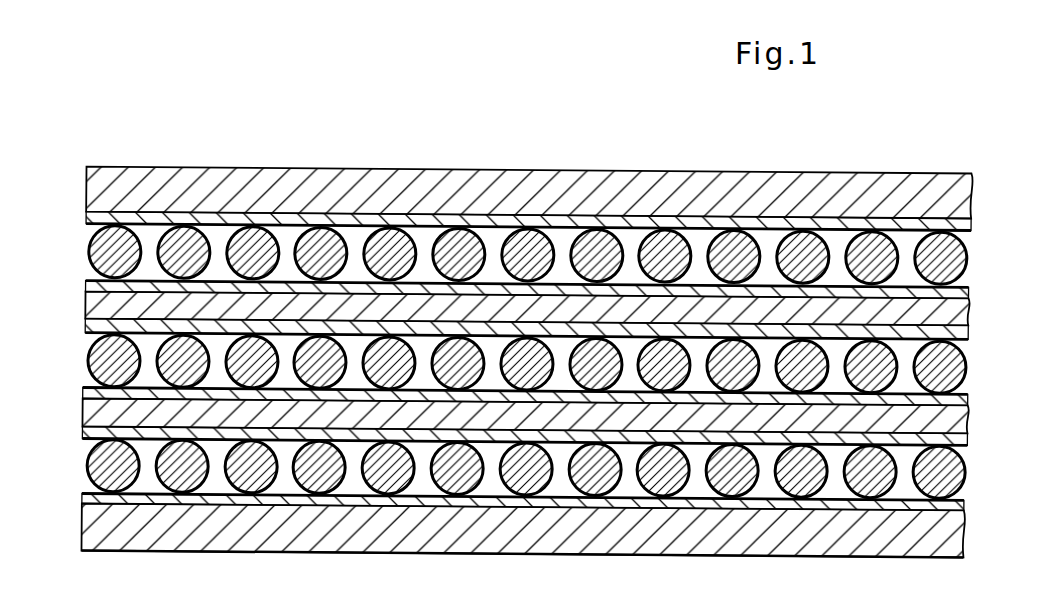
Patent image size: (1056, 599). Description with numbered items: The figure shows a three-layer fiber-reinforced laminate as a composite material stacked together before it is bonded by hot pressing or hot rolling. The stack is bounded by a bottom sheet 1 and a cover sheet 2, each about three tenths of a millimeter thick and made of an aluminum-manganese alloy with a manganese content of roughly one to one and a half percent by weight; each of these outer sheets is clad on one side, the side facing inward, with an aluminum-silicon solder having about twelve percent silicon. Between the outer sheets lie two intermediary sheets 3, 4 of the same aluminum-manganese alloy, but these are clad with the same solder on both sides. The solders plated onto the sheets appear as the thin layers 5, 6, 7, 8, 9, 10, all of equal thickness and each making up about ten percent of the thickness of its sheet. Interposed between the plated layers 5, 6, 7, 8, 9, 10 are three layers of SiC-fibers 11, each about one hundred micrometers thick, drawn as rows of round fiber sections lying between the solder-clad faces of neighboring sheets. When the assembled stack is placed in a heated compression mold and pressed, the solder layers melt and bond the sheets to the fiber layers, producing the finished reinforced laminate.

The bottom sheet 1 is at (112, 533).
The cover sheet 2 is at (107, 194).
The intermediary sheet 3 is at (107, 308).
The intermediary sheet 4 is at (105, 418).
The plated solder layer 5 is at (970, 224).
The plated solder layer 6 is at (968, 284).
The plated solder layer 7 is at (963, 329).
The plated solder layer 8 is at (968, 392).
The plated solder layer 9 is at (965, 437).
The plated solder layer 10 is at (965, 502).
The SiC-fibers 11 is at (460, 248).